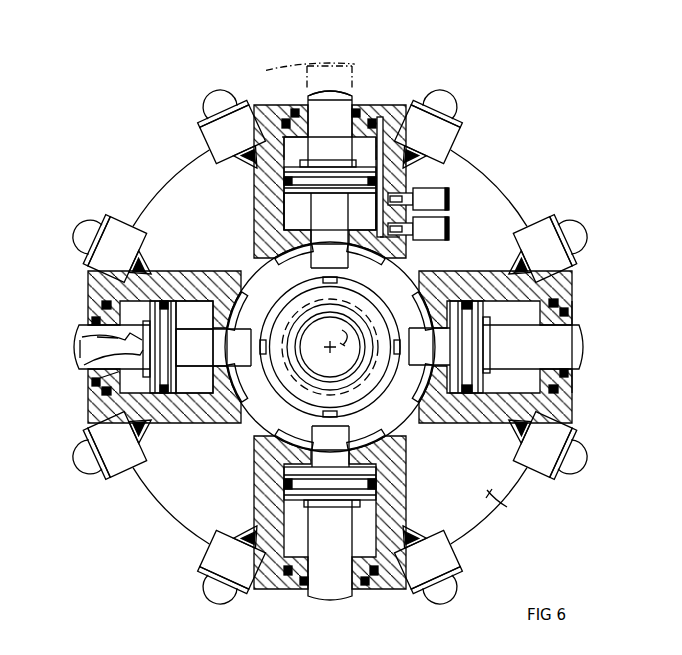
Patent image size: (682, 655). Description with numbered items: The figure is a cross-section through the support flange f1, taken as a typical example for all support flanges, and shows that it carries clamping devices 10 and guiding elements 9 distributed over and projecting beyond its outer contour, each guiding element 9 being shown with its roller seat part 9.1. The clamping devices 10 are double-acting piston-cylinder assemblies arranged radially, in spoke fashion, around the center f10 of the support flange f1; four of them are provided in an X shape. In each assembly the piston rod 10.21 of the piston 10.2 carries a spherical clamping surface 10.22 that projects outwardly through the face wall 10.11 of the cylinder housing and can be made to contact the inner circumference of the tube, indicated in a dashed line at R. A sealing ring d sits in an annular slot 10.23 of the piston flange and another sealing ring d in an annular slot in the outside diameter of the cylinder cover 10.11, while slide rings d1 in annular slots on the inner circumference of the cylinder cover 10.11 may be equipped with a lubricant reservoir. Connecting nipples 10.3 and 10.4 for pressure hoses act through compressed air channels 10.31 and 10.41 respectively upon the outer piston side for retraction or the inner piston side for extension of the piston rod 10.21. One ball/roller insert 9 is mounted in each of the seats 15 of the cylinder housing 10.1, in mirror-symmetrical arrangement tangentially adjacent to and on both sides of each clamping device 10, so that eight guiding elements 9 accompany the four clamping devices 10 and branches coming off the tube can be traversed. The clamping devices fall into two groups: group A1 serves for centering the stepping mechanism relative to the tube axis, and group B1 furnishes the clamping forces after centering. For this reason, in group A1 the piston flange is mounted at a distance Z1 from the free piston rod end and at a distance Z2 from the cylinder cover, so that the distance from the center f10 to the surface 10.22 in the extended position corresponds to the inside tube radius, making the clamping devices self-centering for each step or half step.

The guiding element (ball/roller insert) 9 is at (84, 243).
The roller shoe 9.1 is at (100, 245).
The seat 15 is at (102, 273).
The clamping device 10 is at (377, 70).
The cylinder housing 10.1 is at (210, 412).
The face wall (cylinder cover) 10.11 is at (572, 390).
The piston 10.2 is at (175, 302).
The piston rod 10.21 is at (202, 328).
The spherical clamping surface 10.22 is at (341, 82).
The annular slot 10.23 is at (215, 372).
The connecting nipple 10.3 is at (438, 198).
The compressed air channel 10.31 is at (395, 180).
The connecting nipple 10.4 is at (438, 228).
The compressed air channel 10.41 is at (388, 242).
The clamping device group A1 is at (298, 82).
The clamping device group B1 is at (593, 352).
The distance Z1 is at (97, 337).
The distance Z2 is at (100, 378).
The sealing ring d is at (287, 110).
The slide ring d1 is at (296, 111).
The tube R is at (271, 70).
The support flange f1 is at (505, 501).
The center of the support flange f10 is at (330, 334).